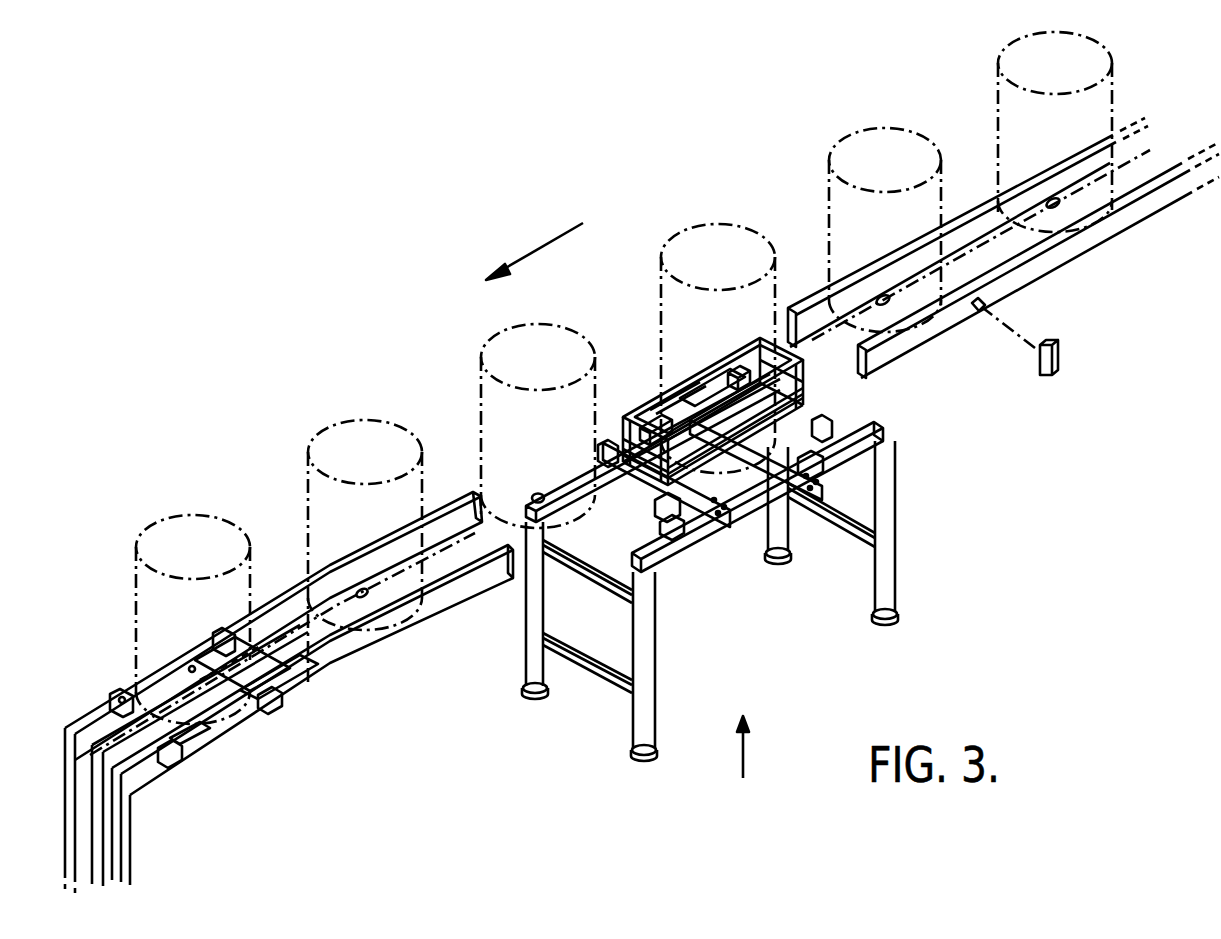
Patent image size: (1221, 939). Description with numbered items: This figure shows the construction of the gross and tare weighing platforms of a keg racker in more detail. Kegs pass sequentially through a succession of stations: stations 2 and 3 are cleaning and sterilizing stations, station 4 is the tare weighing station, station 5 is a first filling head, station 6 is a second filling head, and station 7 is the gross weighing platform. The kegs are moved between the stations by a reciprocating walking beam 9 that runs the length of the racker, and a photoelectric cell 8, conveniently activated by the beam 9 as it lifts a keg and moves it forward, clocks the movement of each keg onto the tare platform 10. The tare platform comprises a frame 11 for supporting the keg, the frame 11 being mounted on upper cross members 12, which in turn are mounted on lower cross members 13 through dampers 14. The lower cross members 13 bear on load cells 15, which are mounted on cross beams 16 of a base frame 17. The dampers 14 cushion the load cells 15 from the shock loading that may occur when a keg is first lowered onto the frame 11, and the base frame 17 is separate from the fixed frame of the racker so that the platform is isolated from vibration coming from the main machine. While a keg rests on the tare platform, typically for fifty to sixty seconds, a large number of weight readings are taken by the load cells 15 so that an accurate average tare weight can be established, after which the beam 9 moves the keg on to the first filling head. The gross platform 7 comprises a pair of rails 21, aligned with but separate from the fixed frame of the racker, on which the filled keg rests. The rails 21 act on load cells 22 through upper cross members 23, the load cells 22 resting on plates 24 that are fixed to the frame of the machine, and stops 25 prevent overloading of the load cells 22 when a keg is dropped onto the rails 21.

The cleaning and sterilizing station 2 is at (1064, 79).
The cleaning and sterilizing station 3 is at (894, 176).
The tare weighing station 4 is at (727, 273).
The first filling head 5 is at (547, 373).
The second filling head 6 is at (374, 468).
The gross weighing platform 7 is at (202, 563).
The photoelectric cell 8 is at (1062, 358).
The walking beam 9 is at (1095, 243).
The tare platform 10 is at (742, 769).
The frame 11 is at (808, 378).
The upper cross members 12 is at (832, 418).
The lower cross members 13 is at (808, 465).
The dampers 14 is at (832, 437).
The load cells 15 is at (670, 422).
The cross beams 16 is at (805, 470).
The base frame 17 is at (890, 600).
The rails 21 is at (130, 697).
The load cells 22 is at (190, 667).
The upper cross members 23 is at (222, 635).
The plates 24 is at (190, 748).
The stops 25 is at (168, 760).